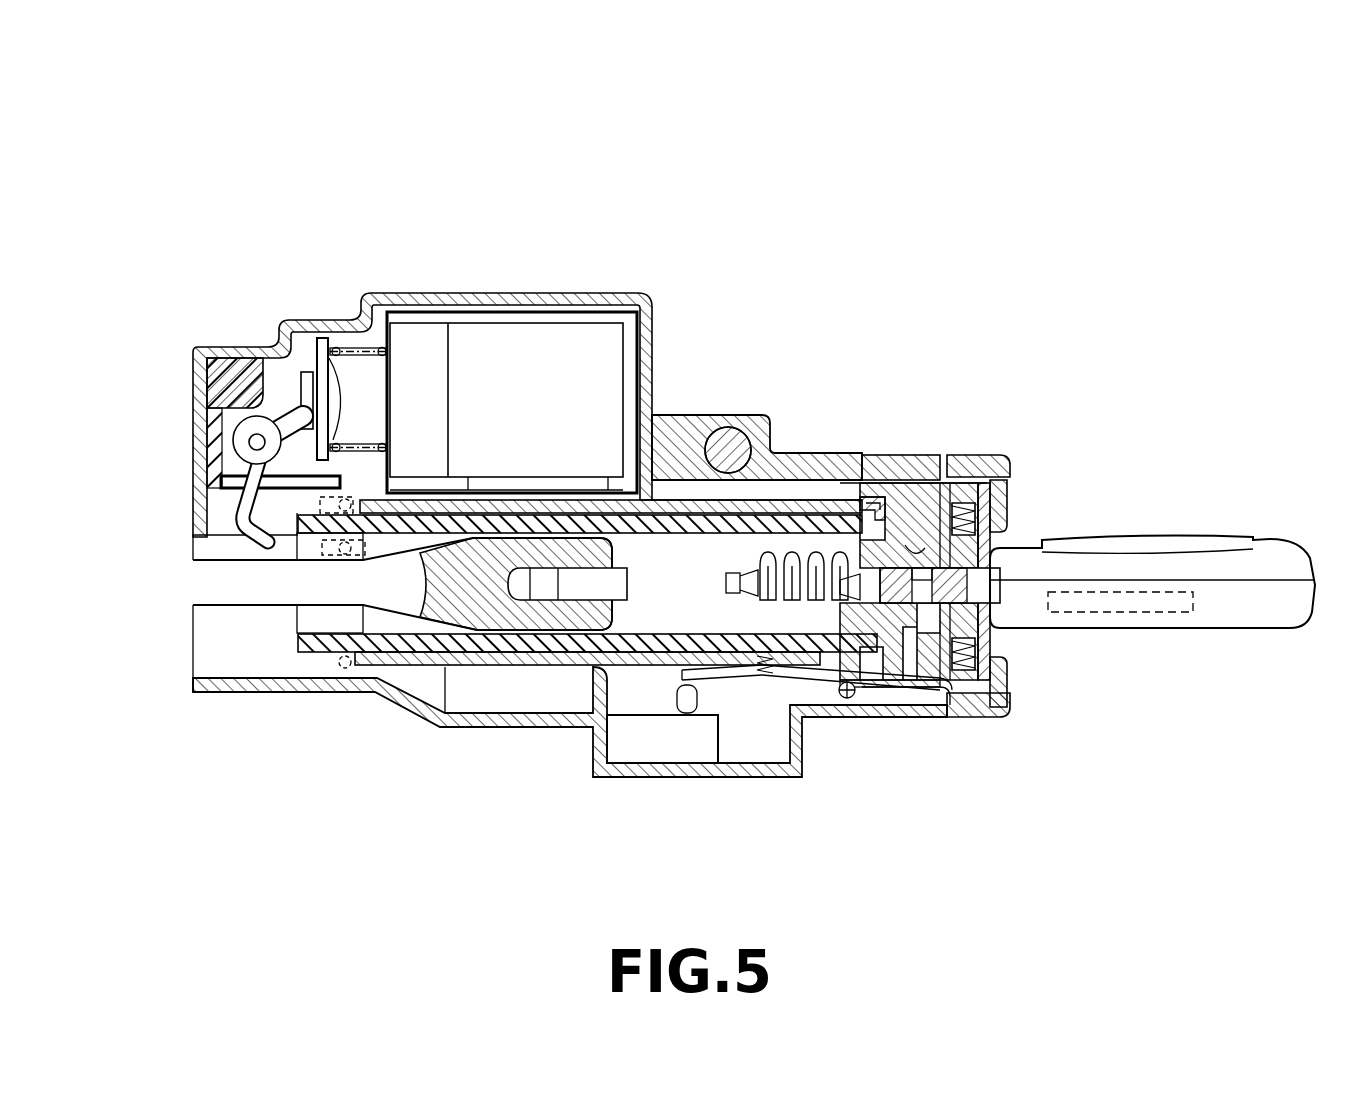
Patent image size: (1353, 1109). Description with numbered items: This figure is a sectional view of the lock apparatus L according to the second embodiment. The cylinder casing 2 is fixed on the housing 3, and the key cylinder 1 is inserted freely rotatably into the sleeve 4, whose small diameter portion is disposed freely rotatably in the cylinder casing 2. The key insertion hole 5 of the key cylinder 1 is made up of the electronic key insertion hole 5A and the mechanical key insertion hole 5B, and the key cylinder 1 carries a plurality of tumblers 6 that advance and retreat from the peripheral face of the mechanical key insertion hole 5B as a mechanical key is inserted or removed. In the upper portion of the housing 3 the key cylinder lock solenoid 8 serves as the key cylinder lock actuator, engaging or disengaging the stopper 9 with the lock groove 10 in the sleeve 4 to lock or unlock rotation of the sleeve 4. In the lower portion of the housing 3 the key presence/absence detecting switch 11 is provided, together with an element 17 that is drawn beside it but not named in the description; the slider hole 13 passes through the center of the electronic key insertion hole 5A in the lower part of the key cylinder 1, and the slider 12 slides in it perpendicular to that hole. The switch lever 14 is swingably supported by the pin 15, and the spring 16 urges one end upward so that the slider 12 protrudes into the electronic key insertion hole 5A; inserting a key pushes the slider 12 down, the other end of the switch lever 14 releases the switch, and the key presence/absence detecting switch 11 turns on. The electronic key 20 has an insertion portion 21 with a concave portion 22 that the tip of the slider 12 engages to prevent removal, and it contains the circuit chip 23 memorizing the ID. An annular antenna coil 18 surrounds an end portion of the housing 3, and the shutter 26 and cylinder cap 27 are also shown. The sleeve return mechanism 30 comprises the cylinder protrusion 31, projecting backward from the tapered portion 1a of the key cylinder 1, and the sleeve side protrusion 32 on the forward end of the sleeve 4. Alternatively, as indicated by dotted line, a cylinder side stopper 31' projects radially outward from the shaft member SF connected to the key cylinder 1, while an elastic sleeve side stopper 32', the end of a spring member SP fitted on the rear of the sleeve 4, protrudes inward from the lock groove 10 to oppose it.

The lock apparatus L is at (795, 238).
The key cylinder 1 is at (660, 445).
The tapered portion 1a is at (900, 717).
The cylinder casing 2 is at (500, 667).
The housing 3 is at (738, 428).
The sleeve 4 is at (306, 652).
The key insertion hole 5 is at (960, 275).
The electronic key insertion hole 5A is at (955, 545).
The mechanical key insertion hole 5B is at (858, 535).
The tumblers 6 is at (740, 596).
The key cylinder lock solenoid 8 is at (487, 335).
The stopper 9 is at (248, 515).
The lock groove 10 is at (300, 560).
The key presence/absence detecting switch 11 is at (663, 768).
The slider 12 is at (930, 705).
The slider hole 13 is at (880, 682).
The switch lever 14 is at (737, 684).
The pin 15 is at (850, 700).
The spring 16 is at (764, 683).
The switch actuator 17 is at (678, 702).
The annular antenna coil 18 is at (1010, 472).
The electronic key 20 is at (1170, 537).
The insertion portion 21 is at (995, 562).
The concave portion 22 is at (985, 460).
The circuit chip 23 is at (1126, 592).
The shutter 26 is at (1003, 665).
The cylinder cap 27 is at (972, 520).
The sleeve return mechanism 30 is at (945, 385).
The cylinder protrusion 31 is at (922, 465).
The sleeve side protrusion 32 is at (875, 443).
The cylinder side stopper 31' is at (279, 632).
The sleeve side stopper 32' is at (258, 622).
The shaft member SF is at (268, 585).
The spring member SP is at (345, 670).